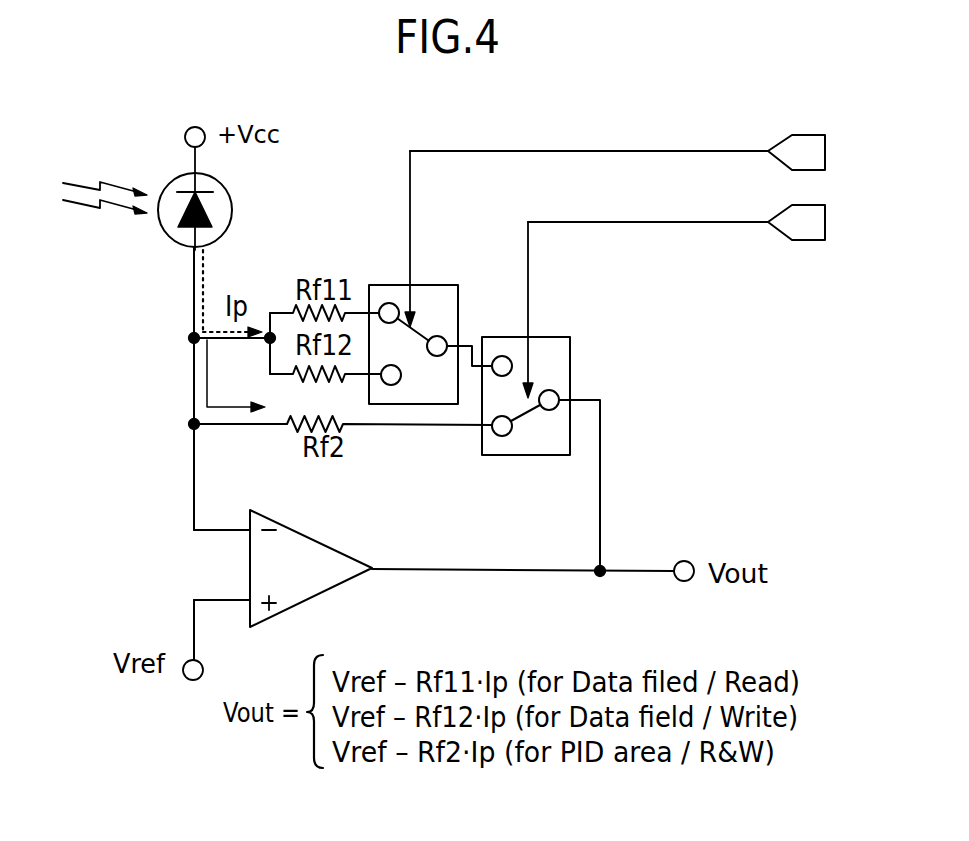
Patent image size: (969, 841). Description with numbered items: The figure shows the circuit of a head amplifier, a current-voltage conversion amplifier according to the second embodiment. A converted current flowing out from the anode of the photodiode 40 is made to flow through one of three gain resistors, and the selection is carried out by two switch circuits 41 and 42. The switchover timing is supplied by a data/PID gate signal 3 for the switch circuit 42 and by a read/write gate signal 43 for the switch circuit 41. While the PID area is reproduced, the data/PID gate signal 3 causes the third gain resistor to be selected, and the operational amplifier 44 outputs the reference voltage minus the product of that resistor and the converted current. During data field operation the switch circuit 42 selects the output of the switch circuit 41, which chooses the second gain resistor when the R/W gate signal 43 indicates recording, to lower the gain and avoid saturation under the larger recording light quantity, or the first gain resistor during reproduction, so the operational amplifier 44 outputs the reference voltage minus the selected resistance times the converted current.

The photodiode 40 is at (237, 197).
The switch circuit 41 is at (432, 285).
The switch circuit 42 is at (570, 367).
The read/write (R/W) gate signal 43 is at (590, 151).
The data/PID gate signal 3 is at (677, 222).
The operational amplifier 44 is at (350, 548).